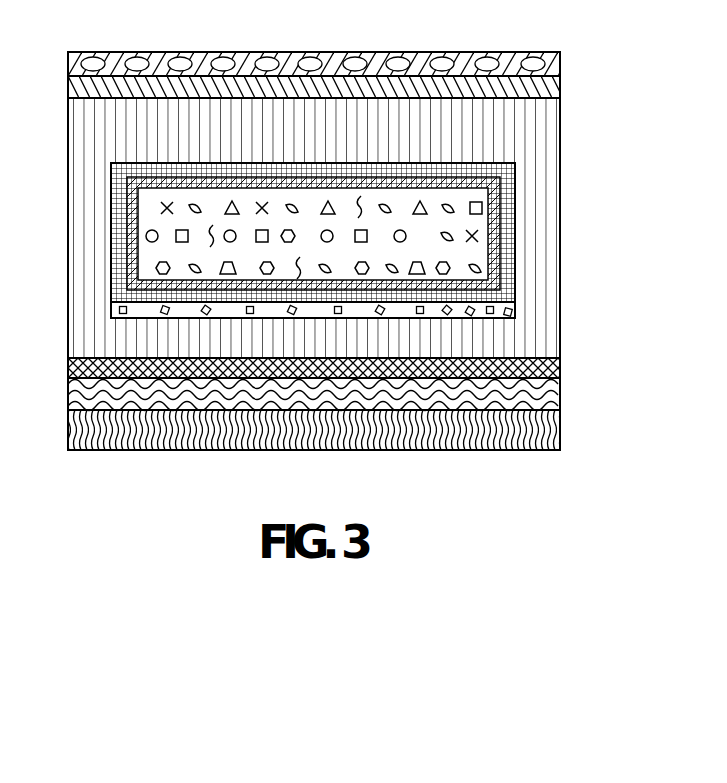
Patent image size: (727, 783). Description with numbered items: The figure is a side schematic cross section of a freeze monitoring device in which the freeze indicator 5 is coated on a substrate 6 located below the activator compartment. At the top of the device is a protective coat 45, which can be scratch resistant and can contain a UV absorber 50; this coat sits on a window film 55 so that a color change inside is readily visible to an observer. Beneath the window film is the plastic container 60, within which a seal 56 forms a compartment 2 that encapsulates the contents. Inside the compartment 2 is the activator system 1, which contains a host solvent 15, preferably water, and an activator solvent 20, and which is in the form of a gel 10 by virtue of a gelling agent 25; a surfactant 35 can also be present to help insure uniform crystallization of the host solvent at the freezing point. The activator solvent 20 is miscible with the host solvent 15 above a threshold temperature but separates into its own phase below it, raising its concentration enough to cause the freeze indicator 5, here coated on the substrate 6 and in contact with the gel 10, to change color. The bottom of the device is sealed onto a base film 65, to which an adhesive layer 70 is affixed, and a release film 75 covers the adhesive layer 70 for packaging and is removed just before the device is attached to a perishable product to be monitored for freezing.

The activator system 1 is at (348, 205).
The compartment 2 is at (517, 320).
The freeze indicator 5 is at (490, 200).
The substrate 6 is at (470, 315).
The gel 10 is at (482, 272).
The host solvent 15 is at (213, 222).
The activator solvent 20 is at (520, 232).
The gelling agent 25 is at (117, 265).
The surfactant 35 is at (146, 234).
The protective coat 45 is at (68, 62).
The UV absorber 50 is at (96, 58).
The window film 55 is at (68, 88).
The seal 56 is at (515, 175).
The plastic container 60 is at (68, 202).
The base film 65 is at (68, 368).
The adhesive layer 70 is at (68, 398).
The release film 75 is at (68, 430).